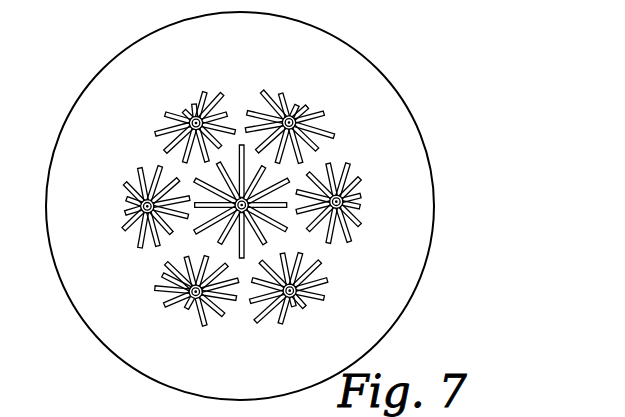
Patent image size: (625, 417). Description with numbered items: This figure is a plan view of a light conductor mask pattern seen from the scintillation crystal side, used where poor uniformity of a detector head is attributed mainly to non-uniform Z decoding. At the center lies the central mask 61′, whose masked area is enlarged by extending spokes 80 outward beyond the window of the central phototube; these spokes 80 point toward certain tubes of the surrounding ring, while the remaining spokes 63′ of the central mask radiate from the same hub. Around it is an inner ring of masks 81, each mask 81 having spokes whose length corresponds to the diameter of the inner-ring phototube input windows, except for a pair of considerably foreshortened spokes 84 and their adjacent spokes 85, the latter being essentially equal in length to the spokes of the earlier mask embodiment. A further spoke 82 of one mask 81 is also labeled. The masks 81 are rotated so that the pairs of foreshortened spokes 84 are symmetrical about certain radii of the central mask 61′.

The masks of the inner ring 81 is at (270, 74).
The spokes 80 is at (241, 143).
The spoke 82 is at (322, 130).
The foreshortened spokes 84 is at (300, 101).
The adjacent spokes 85 is at (284, 100).
The central mask 61′ is at (288, 184).
The spokes 63′ is at (264, 165).